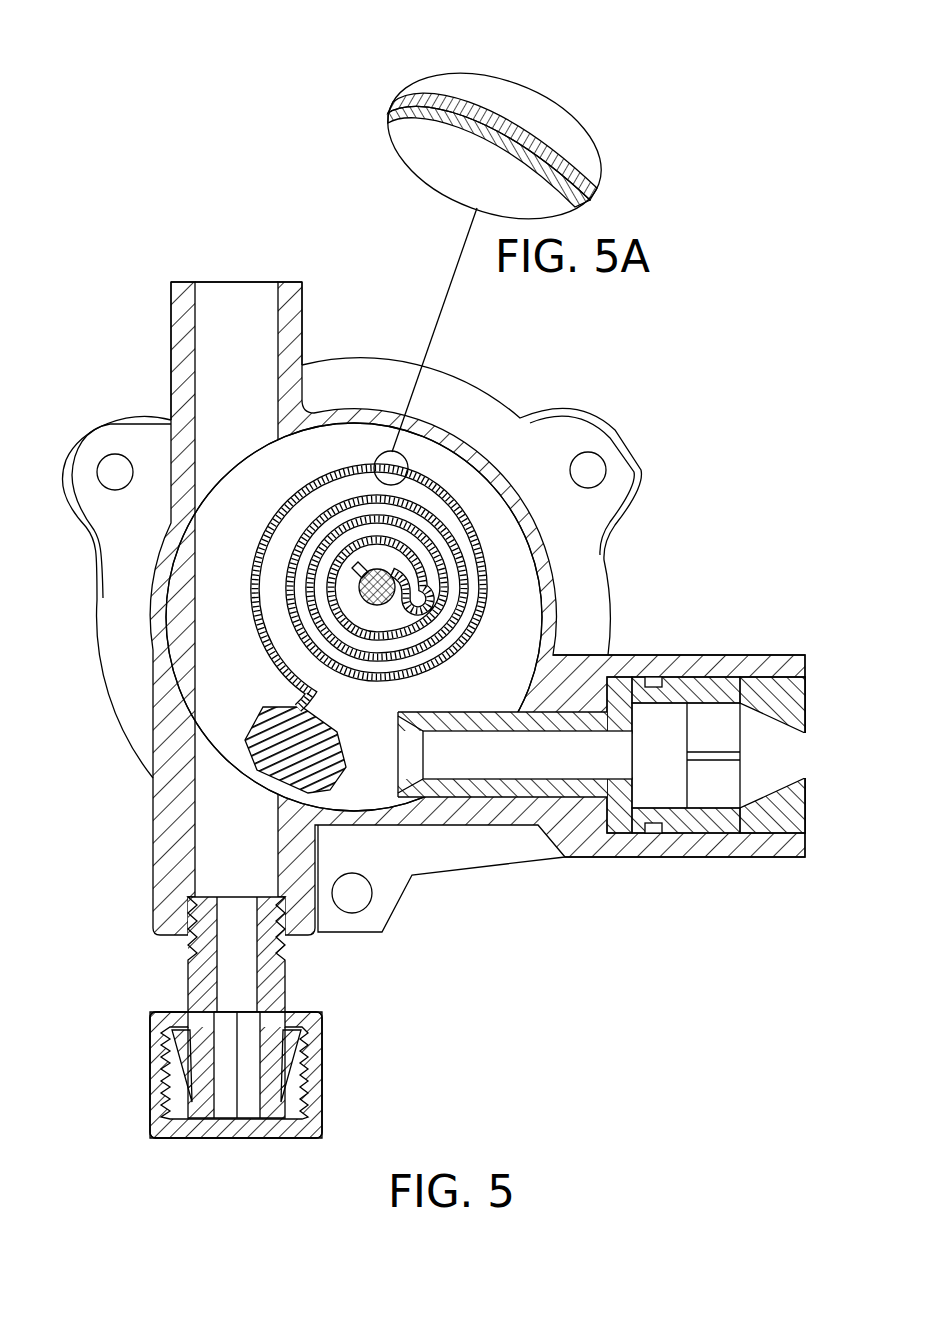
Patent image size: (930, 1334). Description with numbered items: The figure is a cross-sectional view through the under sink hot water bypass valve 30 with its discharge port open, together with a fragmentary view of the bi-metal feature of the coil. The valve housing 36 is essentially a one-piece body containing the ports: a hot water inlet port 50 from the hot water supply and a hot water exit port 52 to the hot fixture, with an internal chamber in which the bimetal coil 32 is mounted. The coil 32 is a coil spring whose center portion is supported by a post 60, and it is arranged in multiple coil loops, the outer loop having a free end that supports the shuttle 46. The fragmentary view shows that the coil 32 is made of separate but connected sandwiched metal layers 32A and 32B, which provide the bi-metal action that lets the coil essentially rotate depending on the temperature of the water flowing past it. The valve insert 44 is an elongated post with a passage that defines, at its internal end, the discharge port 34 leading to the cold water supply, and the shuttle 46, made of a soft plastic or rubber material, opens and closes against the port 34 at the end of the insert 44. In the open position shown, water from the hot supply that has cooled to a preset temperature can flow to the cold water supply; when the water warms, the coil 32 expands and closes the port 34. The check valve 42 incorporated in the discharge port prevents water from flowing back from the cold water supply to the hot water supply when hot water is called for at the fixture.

In FIG. 5, the bypass valve 30 is at (427, 676).
In FIG. 5, the bimetal coil 32 is at (256, 648).
In FIG. 5A, the metal layer 32A is at (472, 104).
In FIG. 5A, the metal layer 32B is at (433, 128).
In FIG. 5, the port 34 is at (518, 755).
In FIG. 5, the valve housing 36 is at (467, 430).
In FIG. 5, the check valve 42 is at (725, 827).
In FIG. 5, the valve insert 44 is at (560, 717).
In FIG. 5, the shuttle 46 is at (341, 784).
In FIG. 5, the hot water inlet port 50 is at (146, 1098).
In FIG. 5, the hot water exit port 52 is at (233, 281).
In FIG. 5, the post 60 is at (360, 600).